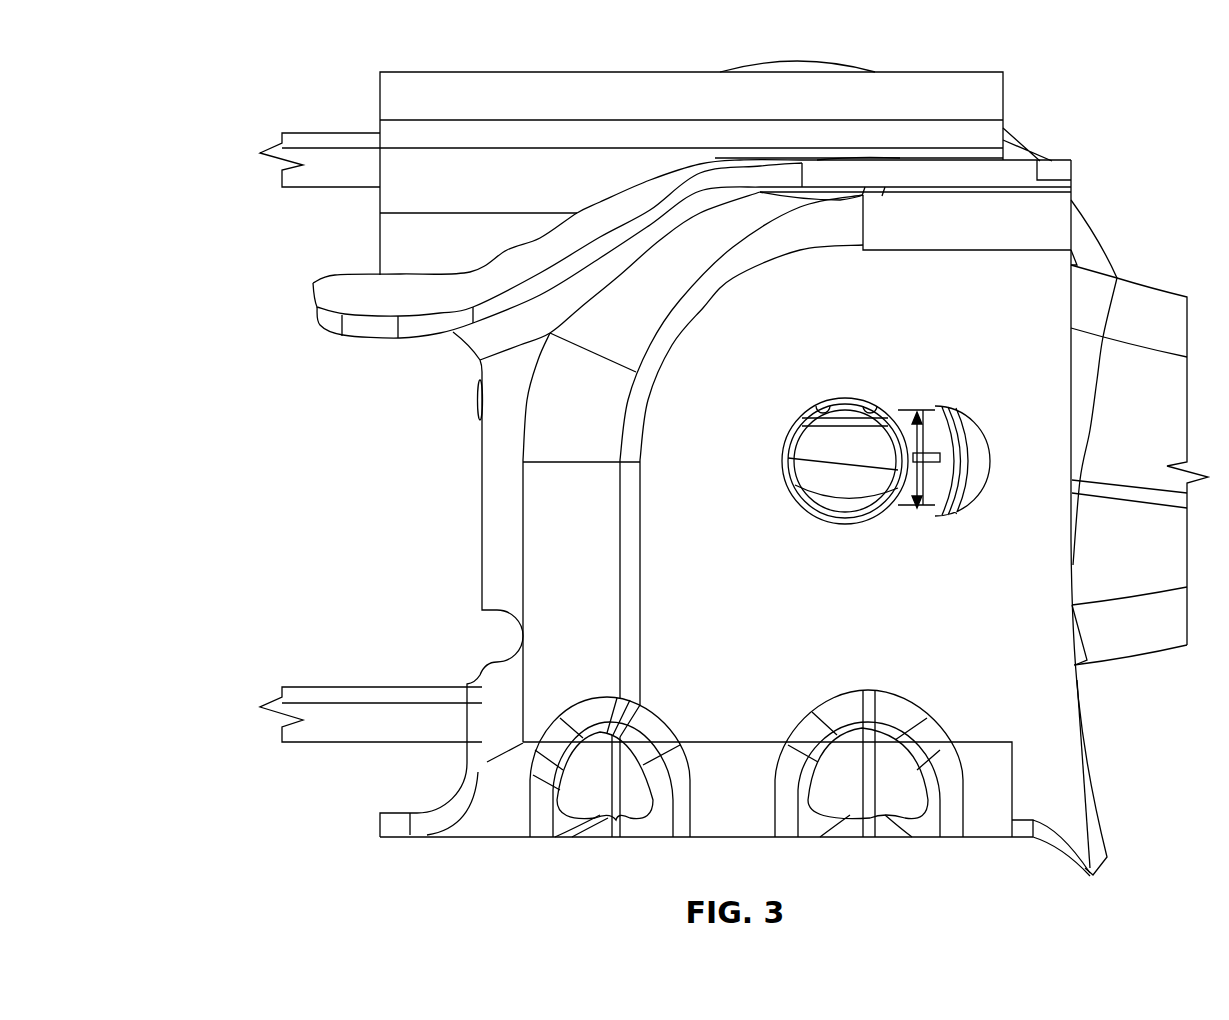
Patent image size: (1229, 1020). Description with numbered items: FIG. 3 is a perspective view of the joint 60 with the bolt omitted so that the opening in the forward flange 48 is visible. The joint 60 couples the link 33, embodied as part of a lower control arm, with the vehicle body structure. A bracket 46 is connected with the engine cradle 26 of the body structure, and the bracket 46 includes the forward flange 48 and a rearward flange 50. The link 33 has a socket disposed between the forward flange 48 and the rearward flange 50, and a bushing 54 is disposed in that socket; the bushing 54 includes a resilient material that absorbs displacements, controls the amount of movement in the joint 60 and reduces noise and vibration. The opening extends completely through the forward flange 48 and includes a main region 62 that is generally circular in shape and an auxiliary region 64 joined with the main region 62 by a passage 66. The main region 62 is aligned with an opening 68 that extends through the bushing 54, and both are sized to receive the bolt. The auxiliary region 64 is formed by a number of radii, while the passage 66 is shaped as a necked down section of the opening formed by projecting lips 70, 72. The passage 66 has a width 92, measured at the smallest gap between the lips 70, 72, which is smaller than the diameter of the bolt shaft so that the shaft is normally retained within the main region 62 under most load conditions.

The engine cradle 26 is at (312, 133).
The link 33 is at (1143, 312).
The bracket 46 is at (1038, 712).
The forward flange 48 is at (978, 296).
The rearward flange 50 is at (537, 173).
The bushing 54 is at (957, 512).
The joint 60 is at (1053, 120).
The main region 62 is at (820, 402).
The auxiliary region 64 is at (942, 402).
The passage 66 is at (918, 514).
The opening 68 is at (850, 405).
The projecting lip 70 is at (903, 455).
The projecting lip 72 is at (888, 518).
The width 92 is at (965, 466).